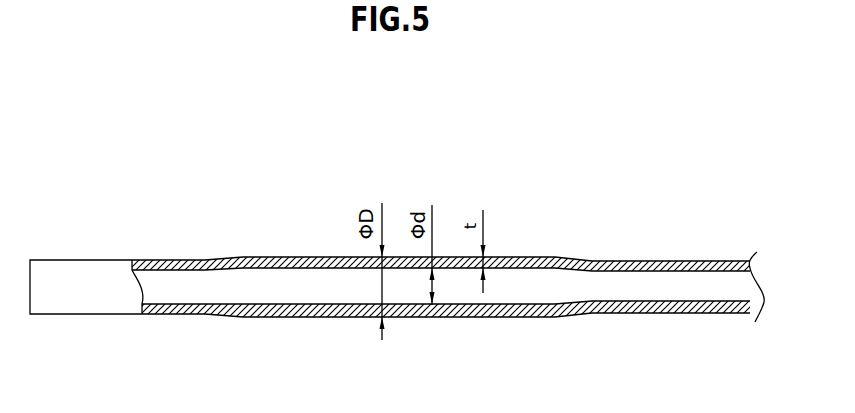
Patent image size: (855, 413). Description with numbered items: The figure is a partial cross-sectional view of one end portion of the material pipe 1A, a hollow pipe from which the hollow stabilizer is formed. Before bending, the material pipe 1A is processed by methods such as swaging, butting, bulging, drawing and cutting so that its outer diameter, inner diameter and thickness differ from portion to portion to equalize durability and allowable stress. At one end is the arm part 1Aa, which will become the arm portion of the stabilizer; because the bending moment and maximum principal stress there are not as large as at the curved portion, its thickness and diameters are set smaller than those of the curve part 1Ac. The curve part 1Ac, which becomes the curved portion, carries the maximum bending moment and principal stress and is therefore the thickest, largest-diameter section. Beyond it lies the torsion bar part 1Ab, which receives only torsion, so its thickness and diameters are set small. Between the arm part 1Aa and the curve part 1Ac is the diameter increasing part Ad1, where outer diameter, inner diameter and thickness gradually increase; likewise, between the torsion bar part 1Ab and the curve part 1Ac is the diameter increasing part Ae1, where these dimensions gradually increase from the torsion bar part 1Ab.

The material pipe 1A is at (397, 237).
The arm part 1Aa is at (30, 330).
The torsion bar part 1Ab is at (612, 330).
The curve part 1Ac is at (548, 330).
The diameter increasing part Ad1 is at (202, 253).
The diameter increasing part Ae1 is at (593, 253).